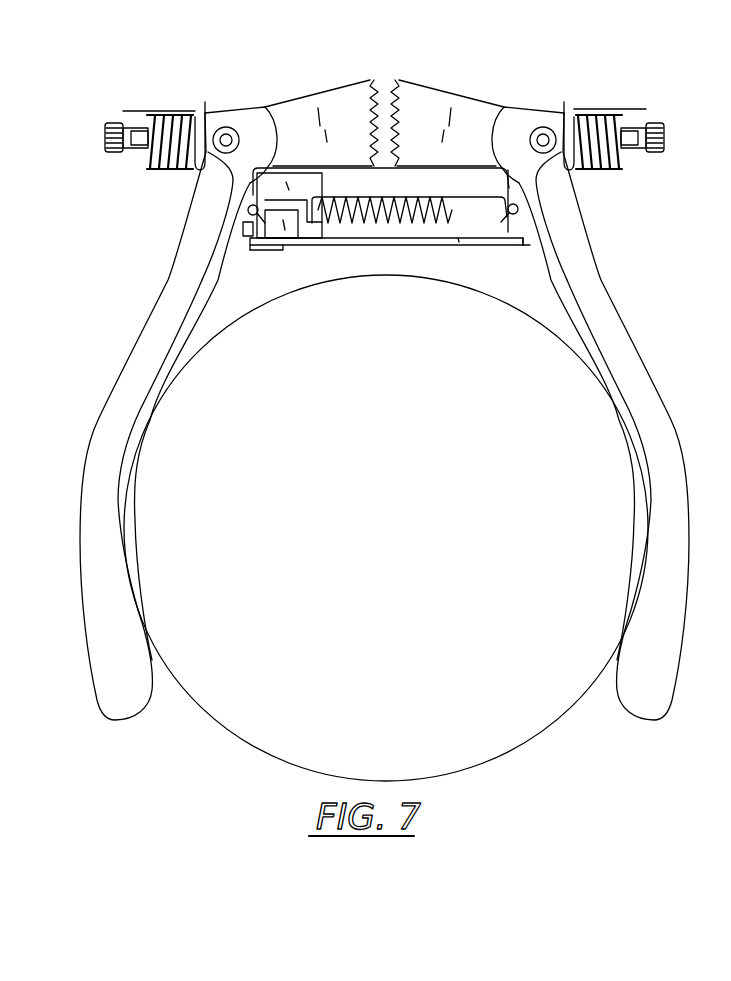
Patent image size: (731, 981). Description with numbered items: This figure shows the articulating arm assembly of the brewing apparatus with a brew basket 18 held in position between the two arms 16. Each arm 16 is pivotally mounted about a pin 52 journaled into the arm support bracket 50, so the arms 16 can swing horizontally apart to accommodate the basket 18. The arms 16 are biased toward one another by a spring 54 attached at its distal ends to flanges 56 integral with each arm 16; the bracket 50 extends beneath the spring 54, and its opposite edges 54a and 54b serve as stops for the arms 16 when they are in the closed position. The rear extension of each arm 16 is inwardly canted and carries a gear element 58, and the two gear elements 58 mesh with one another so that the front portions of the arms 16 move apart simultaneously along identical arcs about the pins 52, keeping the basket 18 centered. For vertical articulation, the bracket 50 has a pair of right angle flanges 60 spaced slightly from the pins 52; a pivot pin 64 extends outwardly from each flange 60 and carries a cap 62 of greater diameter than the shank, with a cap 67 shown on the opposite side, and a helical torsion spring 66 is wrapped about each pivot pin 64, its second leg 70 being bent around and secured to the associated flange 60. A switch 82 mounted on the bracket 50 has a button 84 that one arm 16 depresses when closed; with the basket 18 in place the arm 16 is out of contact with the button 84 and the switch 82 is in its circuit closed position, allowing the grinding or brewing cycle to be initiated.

The arm 16 is at (92, 620).
The brew basket 18 is at (512, 749).
The arm support bracket 50 is at (460, 240).
The pin 52 is at (228, 136).
The spring 54 is at (393, 225).
The edge 54a is at (240, 247).
The edge 54b is at (525, 240).
The flange 56 is at (238, 193).
The gear element 58 is at (373, 85).
The right angle flange 60 is at (193, 117).
The cap 62 is at (105, 128).
The pivot pin 64 is at (142, 149).
The helical torsion spring 66 is at (162, 113).
The knob 67 is at (655, 122).
The second leg 70 is at (203, 107).
The switch 82 is at (282, 240).
The button 84 is at (245, 232).